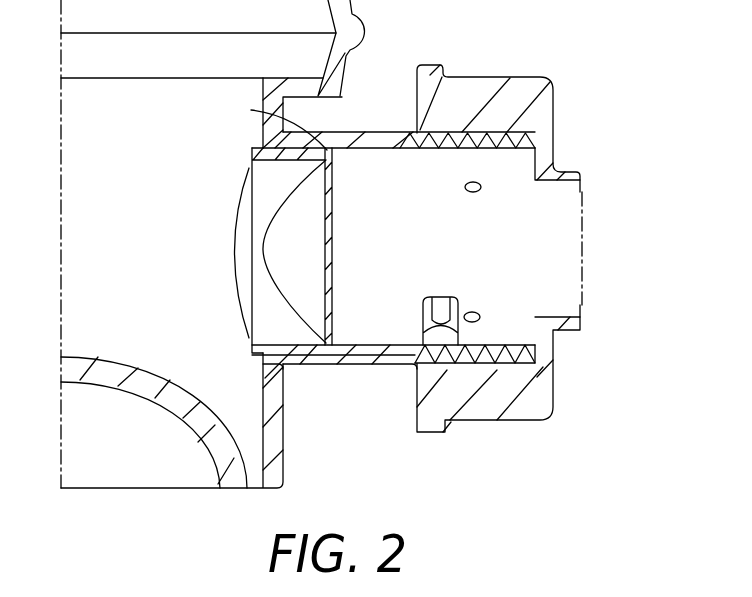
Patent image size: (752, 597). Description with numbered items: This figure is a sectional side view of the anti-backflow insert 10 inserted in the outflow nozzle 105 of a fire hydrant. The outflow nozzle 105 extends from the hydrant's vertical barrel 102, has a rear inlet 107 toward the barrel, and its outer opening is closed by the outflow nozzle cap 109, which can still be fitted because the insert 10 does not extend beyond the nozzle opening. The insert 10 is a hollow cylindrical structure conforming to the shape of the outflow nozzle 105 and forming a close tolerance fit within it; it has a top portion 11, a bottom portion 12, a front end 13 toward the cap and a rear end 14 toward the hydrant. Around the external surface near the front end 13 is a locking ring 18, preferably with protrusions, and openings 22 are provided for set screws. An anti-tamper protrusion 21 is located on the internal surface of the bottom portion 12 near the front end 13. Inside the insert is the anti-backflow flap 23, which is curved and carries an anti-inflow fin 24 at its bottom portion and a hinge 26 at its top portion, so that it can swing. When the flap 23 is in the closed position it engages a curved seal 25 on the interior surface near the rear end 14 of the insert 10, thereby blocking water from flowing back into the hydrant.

The anti-backflow insert 10 is at (560, 225).
The top portion 11 is at (401, 130).
The bottom portion 12 is at (385, 355).
The front end 13 is at (535, 279).
The rear end 14 is at (250, 250).
The locking ring 18 is at (503, 345).
The anti-tamper protrusion 21 is at (432, 300).
The openings for set screws 22 is at (474, 193).
The anti-backflow flap 23 is at (333, 234).
The anti-inflow fin 24 is at (322, 322).
The curved seal 25 is at (286, 297).
The hinge 26 is at (251, 108).
The vertical barrel 102 is at (276, 470).
The outflow nozzle 105 is at (362, 132).
The rear inlet 107 is at (240, 207).
The outflow nozzle cap 109 is at (553, 103).